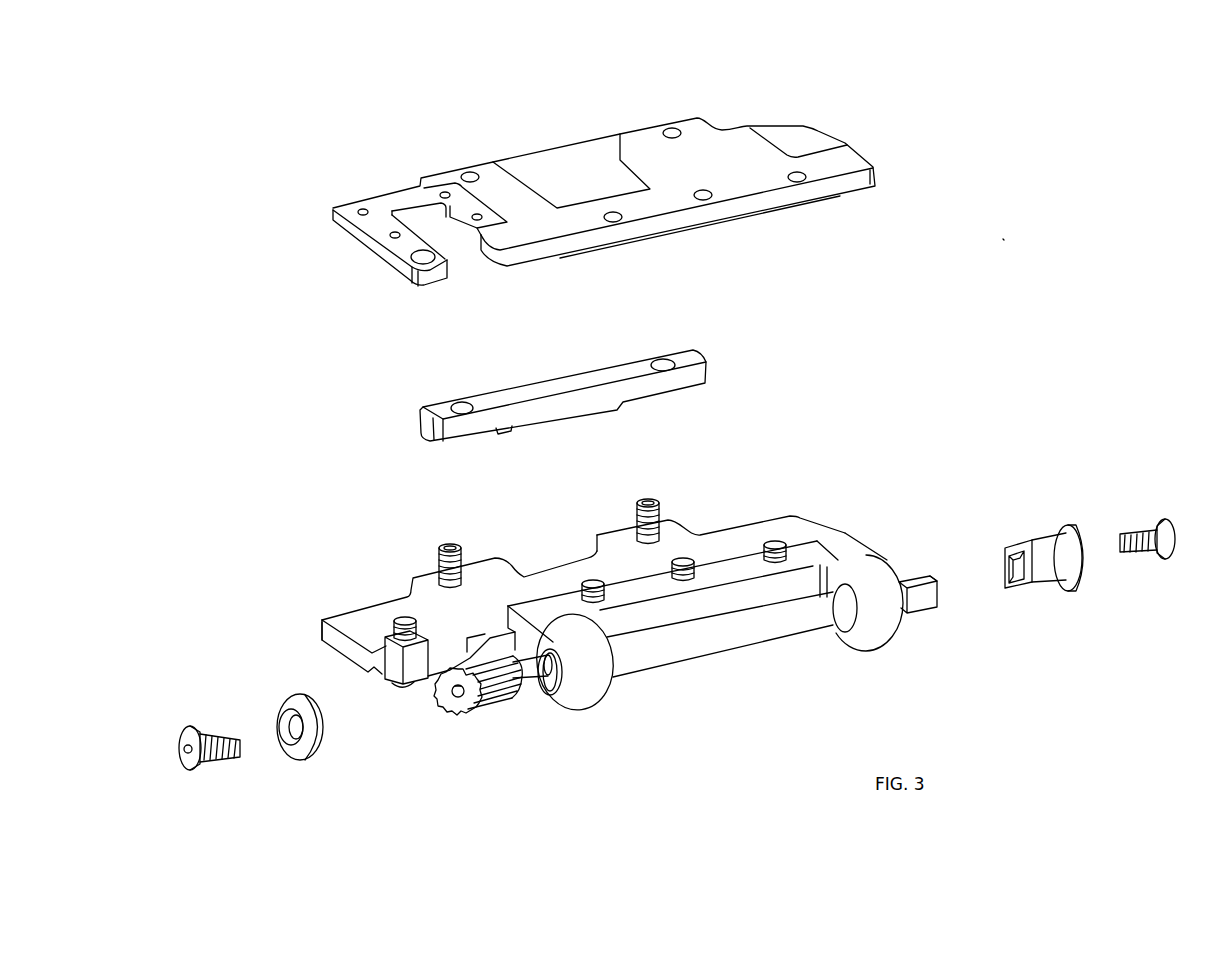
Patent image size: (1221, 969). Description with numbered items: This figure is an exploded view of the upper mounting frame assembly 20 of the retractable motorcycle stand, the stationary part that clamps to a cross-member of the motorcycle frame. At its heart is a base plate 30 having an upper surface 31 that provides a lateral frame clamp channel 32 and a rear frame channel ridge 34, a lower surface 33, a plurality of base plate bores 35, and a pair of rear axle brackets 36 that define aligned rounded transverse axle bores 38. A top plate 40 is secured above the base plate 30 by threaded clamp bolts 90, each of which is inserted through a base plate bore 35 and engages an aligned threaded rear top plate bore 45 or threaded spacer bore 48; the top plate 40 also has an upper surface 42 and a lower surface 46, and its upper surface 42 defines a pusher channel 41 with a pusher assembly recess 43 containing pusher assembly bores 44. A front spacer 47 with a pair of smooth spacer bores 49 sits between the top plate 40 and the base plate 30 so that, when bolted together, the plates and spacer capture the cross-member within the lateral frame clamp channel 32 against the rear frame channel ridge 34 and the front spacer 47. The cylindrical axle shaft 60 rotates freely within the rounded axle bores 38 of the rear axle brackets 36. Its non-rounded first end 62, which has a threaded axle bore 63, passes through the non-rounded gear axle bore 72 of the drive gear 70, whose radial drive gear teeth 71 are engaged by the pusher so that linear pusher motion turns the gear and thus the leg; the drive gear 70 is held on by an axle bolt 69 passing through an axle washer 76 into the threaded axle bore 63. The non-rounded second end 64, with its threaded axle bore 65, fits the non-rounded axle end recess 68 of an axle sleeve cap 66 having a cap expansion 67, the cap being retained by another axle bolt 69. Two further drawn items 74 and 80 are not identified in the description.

The upper mounting frame assembly 20 is at (1007, 236).
The base plate 30 is at (746, 519).
The upper surface 31 is at (485, 594).
The lateral frame clamp channel 32 is at (713, 550).
The lower surface 33 is at (320, 636).
The rear frame channel ridge 34 is at (633, 573).
The base plate bores 35 is at (410, 592).
The rear axle brackets 36 is at (660, 525).
The rounded transverse axle bores 38 is at (850, 586).
The top plate 40 is at (871, 153).
The pusher channel 41 is at (456, 247).
The upper surface 42 is at (741, 146).
The pusher assembly recess 43 is at (378, 203).
The pusher assembly bores 44 is at (380, 243).
The threaded rear top plate bores 45 is at (803, 183).
The lower surface 46 is at (687, 223).
The front spacer 47 is at (571, 387).
The threaded spacer bores 48 is at (675, 128).
The smooth spacer bores 49 is at (665, 362).
The cylindrical axle shaft 60 is at (557, 680).
The non-rounded first end 62 is at (533, 680).
The threaded axle bore 63 is at (443, 704).
The non-rounded second end 64 is at (913, 583).
The threaded axle bore 65 is at (938, 596).
The axle sleeve cap 66 is at (1027, 545).
The cap expansion 67 is at (1067, 587).
The non-rounded axle end recess 68 is at (1008, 549).
The axle bolt 69 is at (1157, 527).
The drive gear 70 is at (500, 710).
The radial drive gear teeth 71 is at (482, 717).
The non-rounded gear axle bore 72 is at (462, 723).
The screw 74 is at (189, 728).
The axle washer 76 is at (307, 734).
The shaft 80 is at (773, 623).
The threaded clamp bolts 90 is at (452, 547).